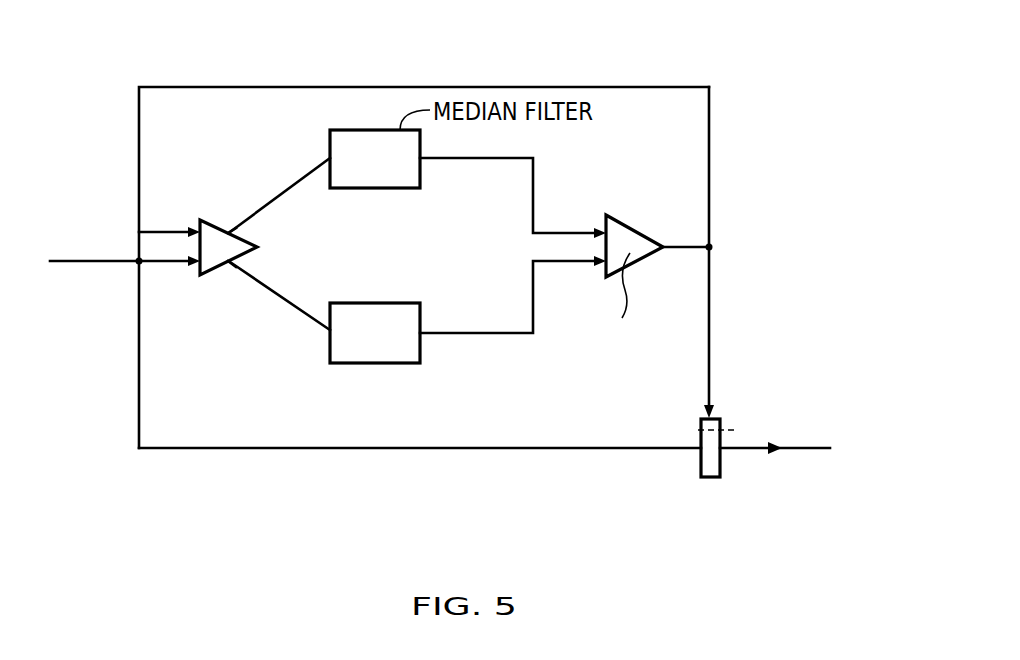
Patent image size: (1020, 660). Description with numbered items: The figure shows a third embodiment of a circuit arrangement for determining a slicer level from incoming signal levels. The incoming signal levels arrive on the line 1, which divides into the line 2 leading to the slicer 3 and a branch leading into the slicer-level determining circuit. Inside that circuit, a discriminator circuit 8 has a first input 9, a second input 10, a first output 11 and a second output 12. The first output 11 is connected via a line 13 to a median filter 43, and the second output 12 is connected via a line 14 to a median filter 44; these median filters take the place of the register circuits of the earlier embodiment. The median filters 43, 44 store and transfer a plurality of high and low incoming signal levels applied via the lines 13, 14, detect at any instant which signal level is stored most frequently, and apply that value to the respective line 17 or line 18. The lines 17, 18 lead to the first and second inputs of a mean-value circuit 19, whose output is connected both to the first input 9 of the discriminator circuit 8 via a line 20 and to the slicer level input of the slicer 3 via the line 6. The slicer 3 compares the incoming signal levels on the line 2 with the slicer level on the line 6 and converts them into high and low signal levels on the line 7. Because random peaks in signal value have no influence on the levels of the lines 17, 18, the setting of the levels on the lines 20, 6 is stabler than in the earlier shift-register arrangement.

The line 1 is at (101, 264).
The line 2 is at (437, 450).
The slicer 3 is at (710, 478).
The line 6 is at (712, 332).
The line 7 is at (797, 451).
The discriminator circuit 8 is at (212, 222).
The first input 9 is at (200, 224).
The second input 10 is at (198, 268).
The first output 11 is at (233, 234).
The second output 12 is at (233, 261).
The line 13 is at (284, 187).
The line 14 is at (284, 301).
The line 17 is at (473, 161).
The line 18 is at (478, 336).
The mean-value circuit 19 is at (628, 226).
The line 20 is at (430, 86).
The median filter 43 is at (367, 191).
The median filter 44 is at (368, 366).